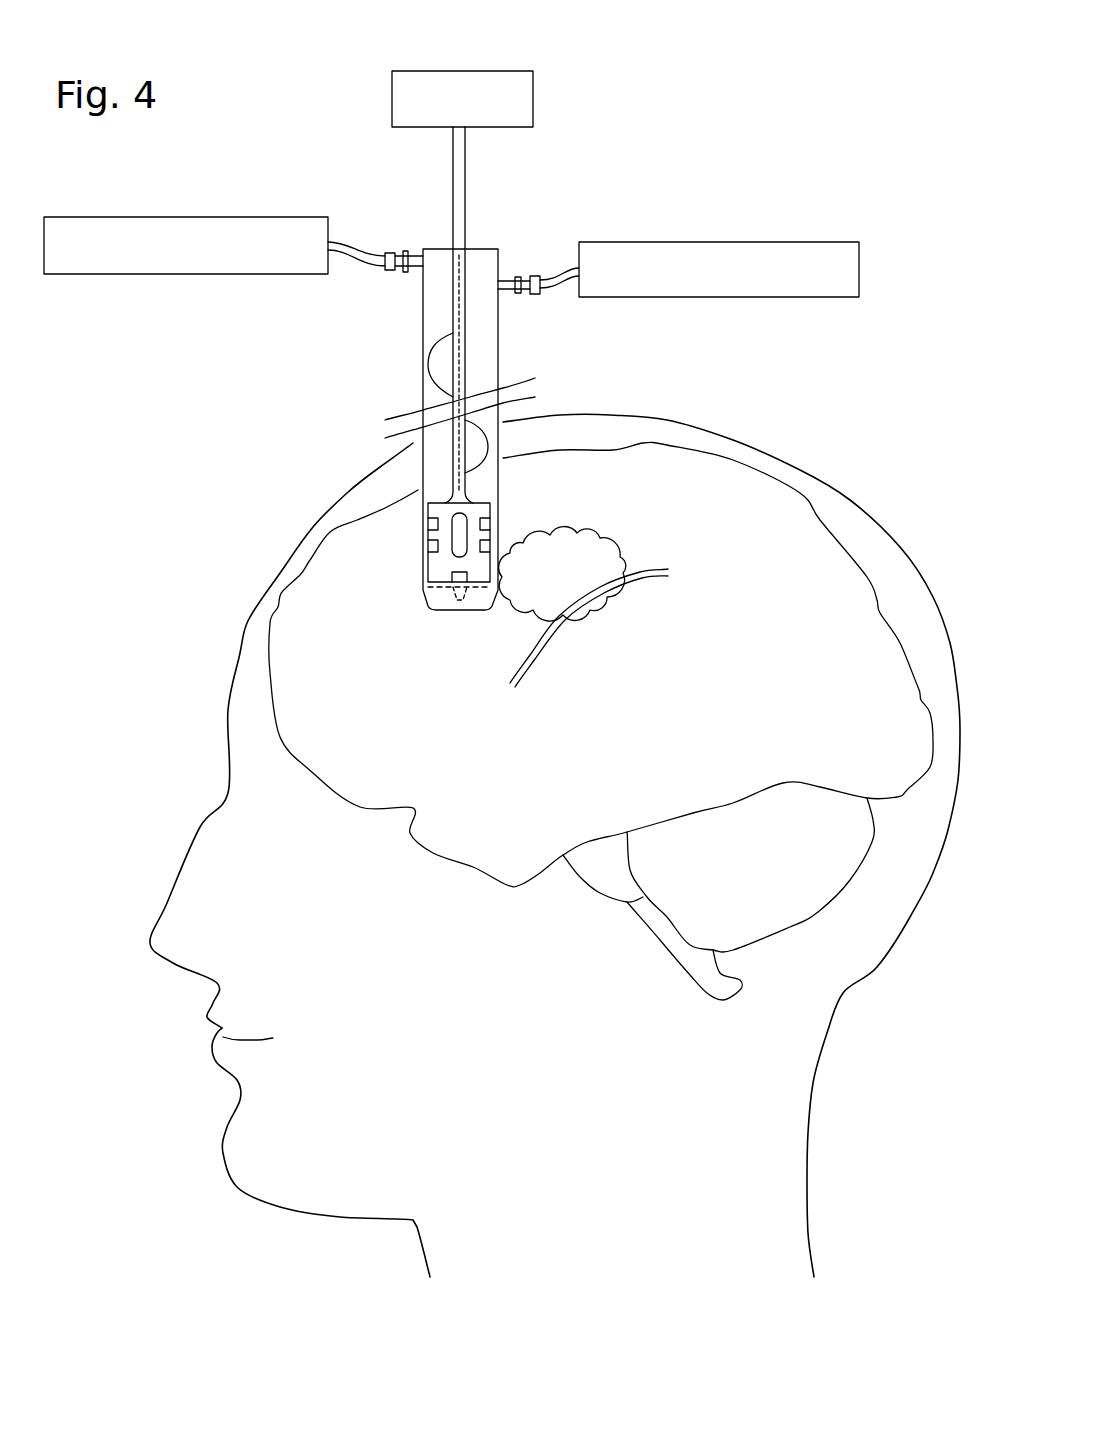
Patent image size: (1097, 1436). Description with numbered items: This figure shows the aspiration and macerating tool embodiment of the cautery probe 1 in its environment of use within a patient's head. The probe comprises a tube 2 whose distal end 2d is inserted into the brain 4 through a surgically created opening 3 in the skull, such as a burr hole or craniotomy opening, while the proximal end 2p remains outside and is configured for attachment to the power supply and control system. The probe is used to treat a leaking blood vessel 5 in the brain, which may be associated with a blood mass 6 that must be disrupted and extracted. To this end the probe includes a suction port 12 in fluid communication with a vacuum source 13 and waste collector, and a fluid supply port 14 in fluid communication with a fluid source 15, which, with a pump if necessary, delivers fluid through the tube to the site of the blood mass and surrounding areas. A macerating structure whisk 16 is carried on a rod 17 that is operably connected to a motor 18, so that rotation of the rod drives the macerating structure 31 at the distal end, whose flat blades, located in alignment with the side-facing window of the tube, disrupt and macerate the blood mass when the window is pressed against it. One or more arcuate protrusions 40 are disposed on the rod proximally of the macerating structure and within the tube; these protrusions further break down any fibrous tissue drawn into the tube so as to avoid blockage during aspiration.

The cautery probe 1 is at (451, 322).
The tube 2 is at (428, 510).
The proximal end 2p is at (405, 225).
The distal end 2d is at (410, 584).
The surgically created opening 3 is at (505, 422).
The brain 4 is at (670, 447).
The blood vessel 5 is at (545, 662).
The blood mass 6 is at (562, 574).
The suction port 12 is at (538, 295).
The vacuum source 13 is at (670, 242).
The fluid supply port 14 is at (392, 272).
The fluid source 15 is at (192, 217).
The macerating structure whisk 16 is at (493, 513).
The rod 17 is at (470, 490).
The motor 18 is at (430, 71).
The macerating structure 31 is at (430, 562).
The arcuate protrusions 40 is at (430, 357).